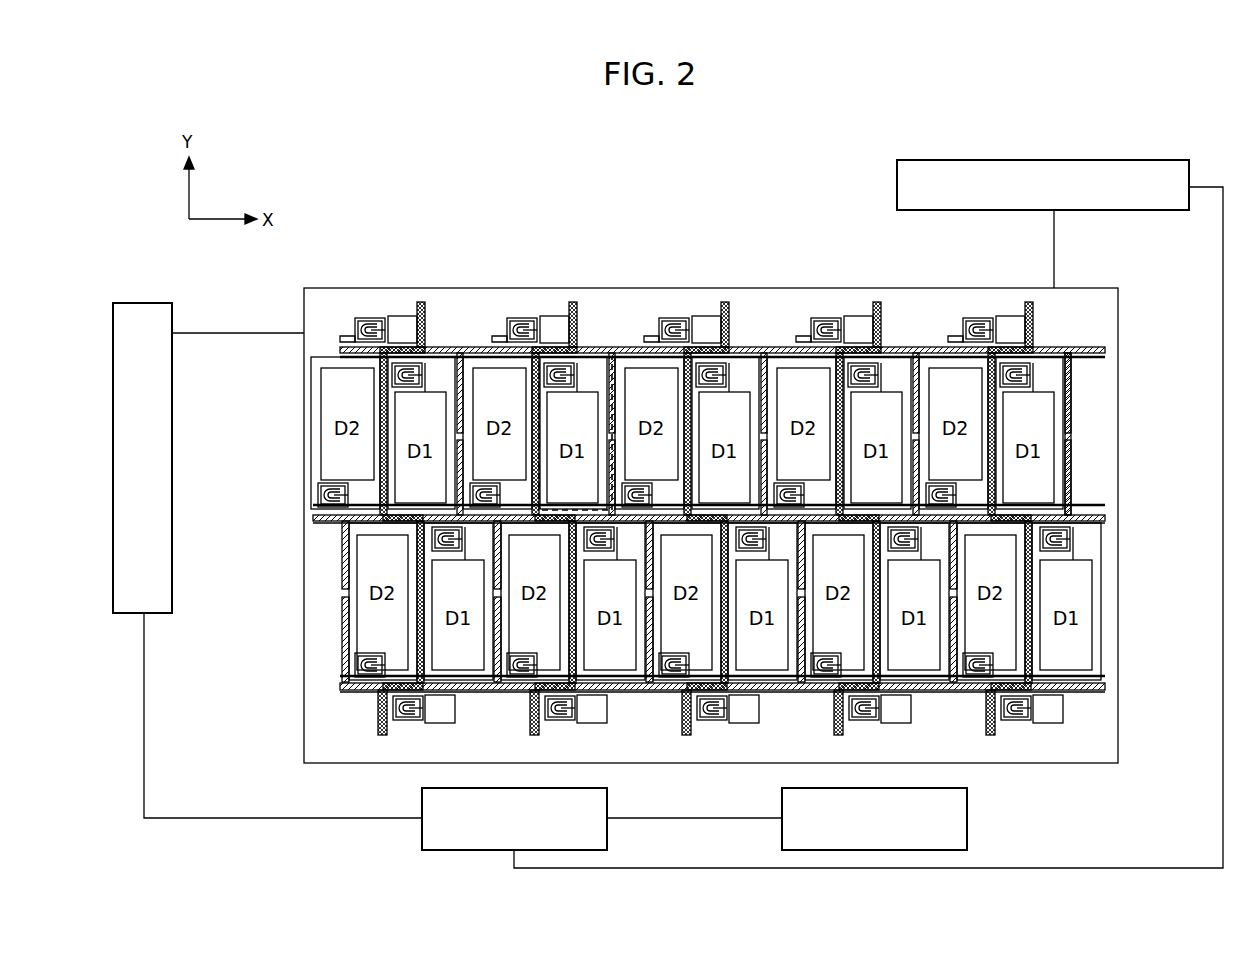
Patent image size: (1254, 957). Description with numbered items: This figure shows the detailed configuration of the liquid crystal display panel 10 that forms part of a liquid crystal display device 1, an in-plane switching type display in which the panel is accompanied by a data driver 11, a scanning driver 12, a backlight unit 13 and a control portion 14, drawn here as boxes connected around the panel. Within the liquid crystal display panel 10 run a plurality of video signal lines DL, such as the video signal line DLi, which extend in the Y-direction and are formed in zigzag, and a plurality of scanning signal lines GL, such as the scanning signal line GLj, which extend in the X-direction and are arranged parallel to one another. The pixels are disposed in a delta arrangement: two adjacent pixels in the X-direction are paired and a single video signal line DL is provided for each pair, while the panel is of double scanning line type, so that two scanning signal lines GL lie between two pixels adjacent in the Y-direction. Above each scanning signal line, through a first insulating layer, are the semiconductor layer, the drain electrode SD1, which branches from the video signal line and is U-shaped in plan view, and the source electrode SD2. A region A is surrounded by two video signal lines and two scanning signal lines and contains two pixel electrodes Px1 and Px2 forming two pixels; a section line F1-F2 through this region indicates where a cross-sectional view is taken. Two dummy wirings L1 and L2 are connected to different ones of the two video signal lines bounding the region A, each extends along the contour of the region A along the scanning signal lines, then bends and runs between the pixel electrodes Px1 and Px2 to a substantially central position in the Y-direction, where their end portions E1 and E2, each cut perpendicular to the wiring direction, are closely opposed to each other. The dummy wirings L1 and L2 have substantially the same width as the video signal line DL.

The liquid crystal display device 1 is at (768, 176).
The liquid crystal display panel 10 is at (1120, 456).
The data driver 11 is at (1109, 160).
The scanning driver 12 is at (172, 368).
The backlight unit 13 is at (782, 839).
The control portion 14 is at (422, 837).
The video signal lines DL is at (985, 238).
The video signal line DLi is at (421, 302).
The scanning signal lines GL is at (228, 400).
The scanning signal line GLj is at (343, 348).
The drain electrode SD1 is at (524, 323).
The source electrode SD2 is at (546, 325).
The dummy wiring L1 is at (616, 460).
The dummy wiring L2 is at (630, 347).
The region A is at (600, 345).
The line F1-F2 end point F1 is at (548, 372).
The line F1-F2 end point F2 is at (592, 372).
The end portion E1 is at (812, 587).
The end portion E2 is at (802, 593).
The pixel electrode Px1 is at (930, 576).
The pixel electrode Px2 is at (982, 638).